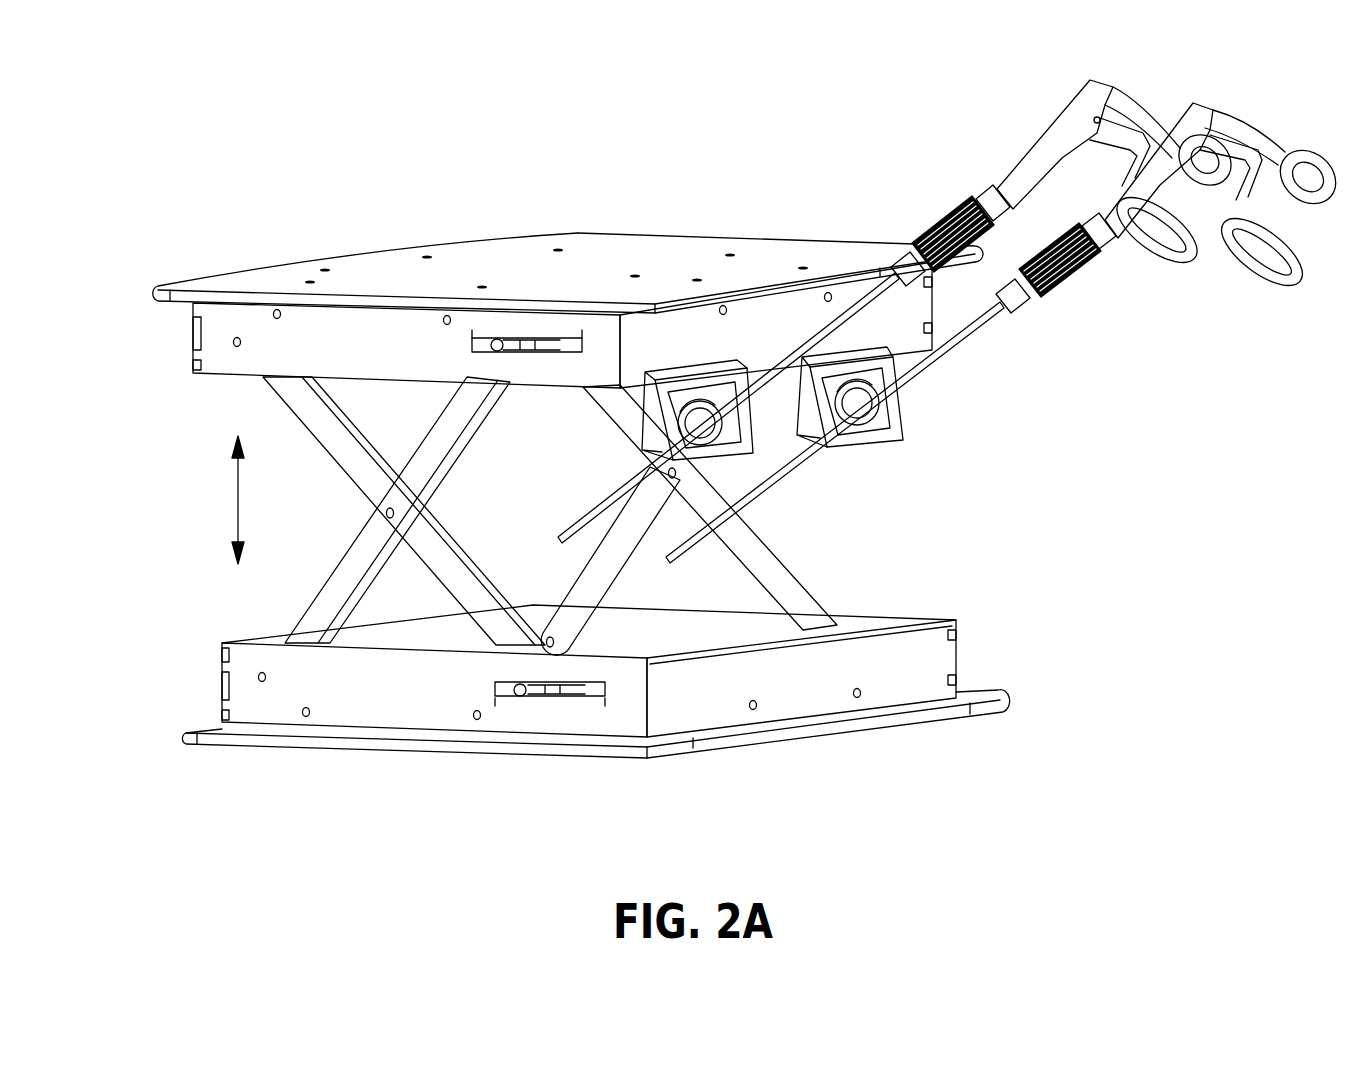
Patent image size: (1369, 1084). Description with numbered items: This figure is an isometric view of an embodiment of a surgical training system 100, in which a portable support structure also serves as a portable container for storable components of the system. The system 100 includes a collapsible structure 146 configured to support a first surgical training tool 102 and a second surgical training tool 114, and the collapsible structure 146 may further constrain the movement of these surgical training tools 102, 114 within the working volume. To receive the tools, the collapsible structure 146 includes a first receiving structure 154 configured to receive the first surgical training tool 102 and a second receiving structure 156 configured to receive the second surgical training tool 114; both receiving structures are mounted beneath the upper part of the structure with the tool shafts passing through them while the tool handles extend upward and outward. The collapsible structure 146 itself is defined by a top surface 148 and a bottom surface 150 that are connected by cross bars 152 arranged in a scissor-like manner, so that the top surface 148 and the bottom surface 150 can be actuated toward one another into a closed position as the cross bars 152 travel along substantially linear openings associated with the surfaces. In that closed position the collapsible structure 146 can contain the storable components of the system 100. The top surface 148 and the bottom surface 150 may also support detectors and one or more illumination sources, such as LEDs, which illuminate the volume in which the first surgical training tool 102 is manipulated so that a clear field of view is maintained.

The system 100 is at (155, 150).
The first surgical training tool 102 is at (1248, 100).
The second surgical training tool 114 is at (1005, 135).
The collapsible structure 146 is at (395, 245).
The top surface 148 is at (700, 243).
The bottom surface 150 is at (385, 752).
The cross bars 152 is at (348, 474).
The first receiving structure 154 is at (895, 402).
The second receiving structure 156 is at (745, 418).